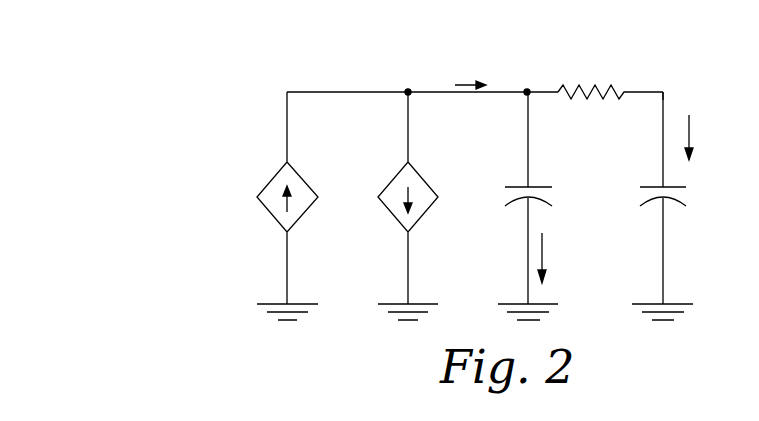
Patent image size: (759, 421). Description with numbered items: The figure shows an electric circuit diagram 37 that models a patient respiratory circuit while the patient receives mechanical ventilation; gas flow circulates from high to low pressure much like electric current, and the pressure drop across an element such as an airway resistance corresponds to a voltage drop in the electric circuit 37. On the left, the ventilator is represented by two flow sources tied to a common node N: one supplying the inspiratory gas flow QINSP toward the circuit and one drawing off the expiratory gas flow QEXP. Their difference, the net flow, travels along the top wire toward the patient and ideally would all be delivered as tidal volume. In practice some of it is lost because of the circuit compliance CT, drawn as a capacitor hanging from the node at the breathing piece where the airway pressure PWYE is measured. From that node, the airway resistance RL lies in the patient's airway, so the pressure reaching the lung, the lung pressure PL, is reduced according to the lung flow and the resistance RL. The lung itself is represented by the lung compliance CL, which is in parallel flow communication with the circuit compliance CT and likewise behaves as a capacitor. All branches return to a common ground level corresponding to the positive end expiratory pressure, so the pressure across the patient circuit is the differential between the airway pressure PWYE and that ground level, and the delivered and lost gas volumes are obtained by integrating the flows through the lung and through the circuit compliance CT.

The electric circuit diagram 37 is at (449, 191).
The airway resistance RL is at (593, 80).
The net flow node N is at (408, 75).
The airway pressure at the breathing piece PWYE is at (525, 79).
The lung pressure PL is at (666, 90).
The inspiratory gas flow QINSP is at (273, 206).
The expiratory gas flow QEXP is at (397, 206).
The circuit compliance CT is at (528, 206).
The lung compliance CL is at (662, 206).